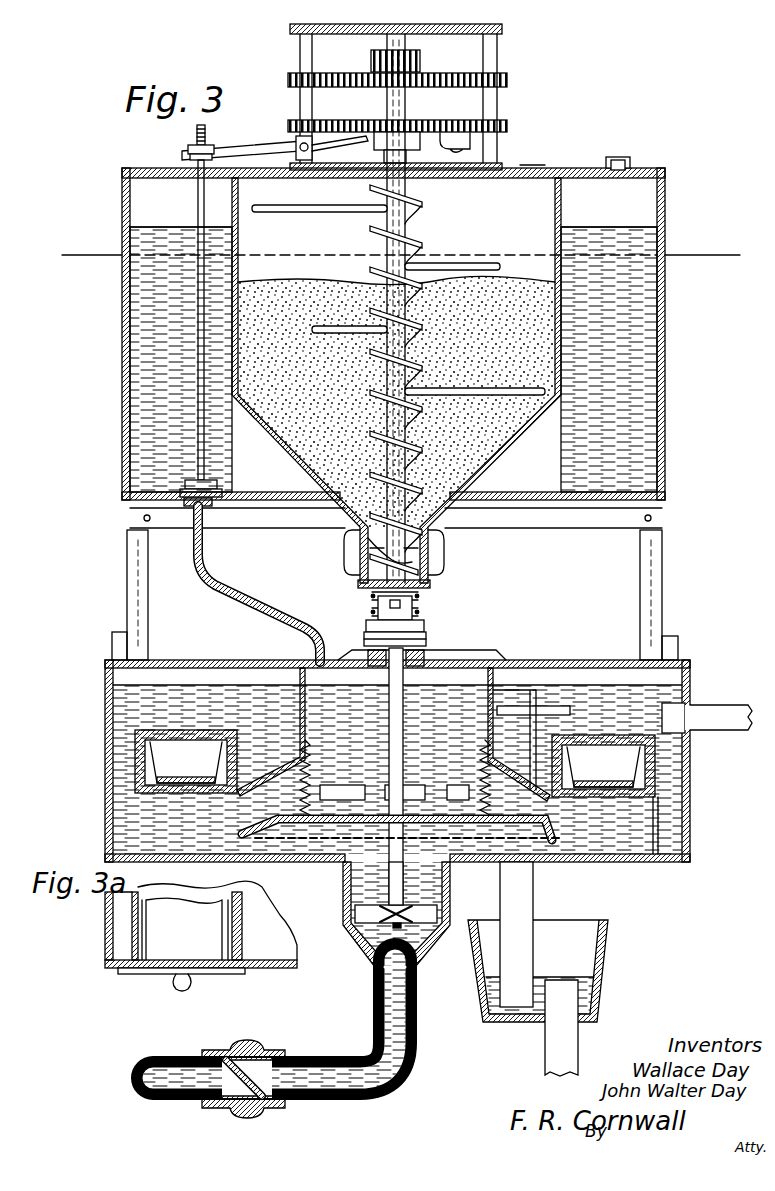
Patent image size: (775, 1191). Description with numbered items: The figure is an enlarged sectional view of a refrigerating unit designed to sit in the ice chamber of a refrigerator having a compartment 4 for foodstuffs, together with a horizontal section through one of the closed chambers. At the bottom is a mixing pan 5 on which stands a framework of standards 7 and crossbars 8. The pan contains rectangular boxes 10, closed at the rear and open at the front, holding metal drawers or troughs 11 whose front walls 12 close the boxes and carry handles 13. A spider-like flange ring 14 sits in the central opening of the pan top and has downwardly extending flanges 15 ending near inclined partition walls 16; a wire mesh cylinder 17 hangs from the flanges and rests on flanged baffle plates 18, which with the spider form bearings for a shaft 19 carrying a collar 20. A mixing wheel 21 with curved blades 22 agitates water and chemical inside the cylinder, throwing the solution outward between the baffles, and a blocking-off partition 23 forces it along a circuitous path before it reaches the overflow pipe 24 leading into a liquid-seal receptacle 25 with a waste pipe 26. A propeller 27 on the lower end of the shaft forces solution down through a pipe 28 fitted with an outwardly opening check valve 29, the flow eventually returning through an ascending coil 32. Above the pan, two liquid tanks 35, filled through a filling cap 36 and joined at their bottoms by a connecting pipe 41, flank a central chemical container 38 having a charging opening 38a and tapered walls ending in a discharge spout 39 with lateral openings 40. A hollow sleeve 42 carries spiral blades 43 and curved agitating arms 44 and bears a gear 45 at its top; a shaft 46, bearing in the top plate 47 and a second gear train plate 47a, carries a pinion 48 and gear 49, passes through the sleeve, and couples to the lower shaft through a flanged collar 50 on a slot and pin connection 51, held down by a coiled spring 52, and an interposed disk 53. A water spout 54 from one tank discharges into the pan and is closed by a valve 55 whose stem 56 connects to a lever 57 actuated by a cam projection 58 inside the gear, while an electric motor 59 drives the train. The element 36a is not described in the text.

In FIG. 3, the compartment 4 is at (400, 251).
In FIG. 3, the mixing pan 5 is at (105, 725).
In FIG. 3A, the mixing pan 5 is at (105, 930).
In FIG. 3, the standards 7 is at (127, 586).
In FIG. 3, the crossbars 8 is at (122, 173).
In FIG. 3, the boxes 10 is at (135, 769).
In FIG. 3, the drawers or troughs 11 is at (156, 781).
In FIG. 3A, the drawers or troughs 11 is at (185, 929).
In FIG. 3A, the front walls 12 is at (222, 976).
In FIG. 3A, the handles 13 is at (177, 988).
In FIG. 3, the spider-like flange ring 14 is at (478, 660).
In FIG. 3, the flanges 15 is at (300, 680).
In FIG. 3, the inclined partition walls 16 is at (263, 772).
In FIG. 3, the wire mesh cylinder 17 is at (320, 826).
In FIG. 3, the flanged baffle plates 18 is at (468, 862).
In FIG. 3, the shaft 19 is at (398, 684).
In FIG. 3, the collar 20 is at (428, 645).
In FIG. 3, the mixing wheel 21 is at (427, 792).
In FIG. 3, the curved blades 22 is at (354, 792).
In FIG. 3, the blocking-off partition 23 is at (690, 826).
In FIG. 3, the overflow pipe 24 is at (533, 891).
In FIG. 3, the receptacle 25 is at (592, 943).
In FIG. 3, the waste pipe 26 is at (578, 1050).
In FIG. 3, the propeller 27 is at (428, 916).
In FIG. 3, the pipe 28 is at (416, 1072).
In FIG. 3, the check valve 29 is at (225, 1052).
In FIG. 3, the ascending coil 32 is at (728, 712).
In FIG. 3, the liquid tanks 35 is at (140, 204).
In FIG. 3, the filling cap 36 is at (624, 157).
In FIG. 3, the cover plate 36a is at (540, 170).
In FIG. 3, the chemical container 38 is at (396, 380).
In FIG. 3, the charging opening 38a is at (520, 172).
In FIG. 3, the discharge spout 39 is at (444, 560).
In FIG. 3, the lateral openings 40 is at (362, 548).
In FIG. 3, the connecting pipe 41 is at (545, 500).
In FIG. 3, the hollow shaft or sleeve 42 is at (410, 217).
In FIG. 3, the spiral blades 43 is at (372, 226).
In FIG. 3, the agitating arms 44 is at (288, 213).
In FIG. 3, the gear 45 is at (450, 120).
In FIG. 3, the shaft 46 is at (390, 99).
In FIG. 3, the top plate 47 is at (433, 26).
In FIG. 3, the gear train plate 47a is at (352, 178).
In FIG. 3, the pinion 48 is at (420, 58).
In FIG. 3, the gear 49 is at (500, 80).
In FIG. 3, the flanged collar 50 is at (424, 624).
In FIG. 3, the slot and pin connection 51 is at (378, 608).
In FIG. 3, the coiled spring 52 is at (372, 598).
In FIG. 3, the interposed disk 53 is at (364, 637).
In FIG. 3, the water spout 54 is at (236, 578).
In FIG. 3, the valve 55 is at (125, 494).
In FIG. 3, the stem 56 is at (197, 205).
In FIG. 3, the lever 57 is at (251, 149).
In FIG. 3, the cam projection 58 is at (470, 163).
In FIG. 3, the electric motor 59 is at (358, 551).